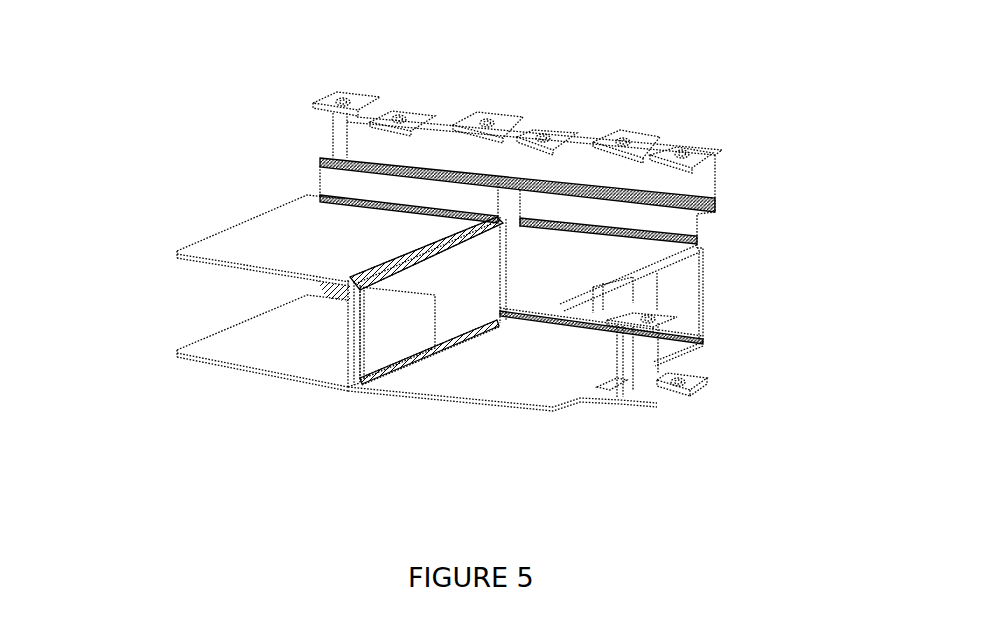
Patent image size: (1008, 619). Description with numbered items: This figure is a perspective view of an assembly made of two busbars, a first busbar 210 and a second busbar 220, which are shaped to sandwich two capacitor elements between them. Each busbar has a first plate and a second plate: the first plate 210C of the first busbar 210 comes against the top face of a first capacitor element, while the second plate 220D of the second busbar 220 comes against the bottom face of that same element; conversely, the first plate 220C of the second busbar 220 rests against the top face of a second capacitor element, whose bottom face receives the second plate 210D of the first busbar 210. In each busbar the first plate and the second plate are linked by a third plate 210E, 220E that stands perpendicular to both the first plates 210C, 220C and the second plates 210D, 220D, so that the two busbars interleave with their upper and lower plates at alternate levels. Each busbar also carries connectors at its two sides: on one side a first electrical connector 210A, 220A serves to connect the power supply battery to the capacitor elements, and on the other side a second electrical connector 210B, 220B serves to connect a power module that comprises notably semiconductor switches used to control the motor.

The first busbar 210 is at (166, 256).
The second busbar 220 is at (166, 356).
The first electrical connector 210A is at (702, 388).
The first electrical connector 220A is at (653, 330).
The second electrical connector 210B is at (351, 93).
The second electrical connector 220B is at (403, 112).
The first plate 210C is at (267, 228).
The first plate 220C is at (632, 250).
The second plate 210D is at (533, 391).
The second plate 220D is at (233, 353).
The third plate 210E is at (443, 313).
The third plate 220E is at (390, 350).